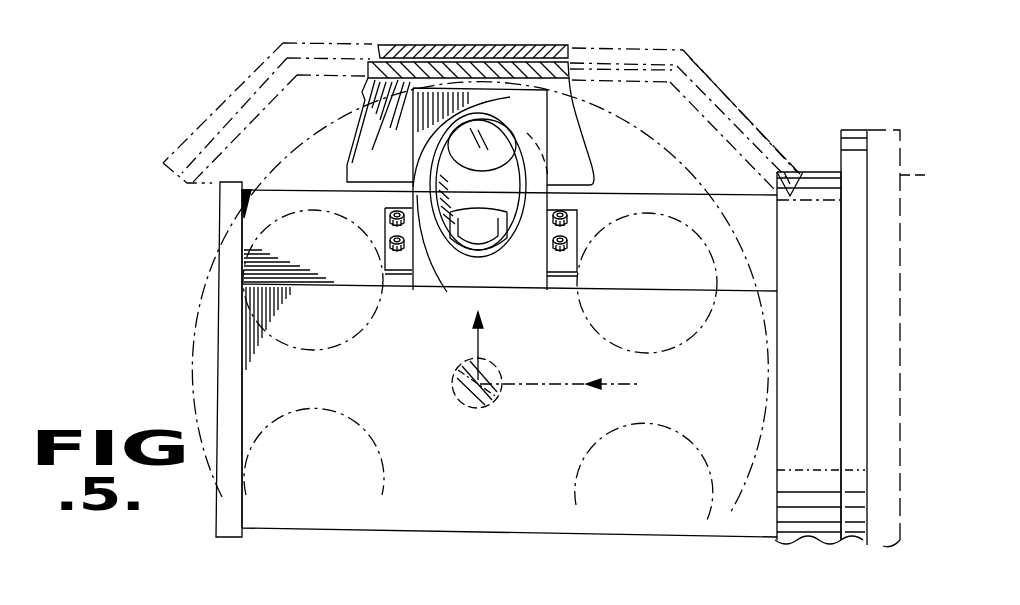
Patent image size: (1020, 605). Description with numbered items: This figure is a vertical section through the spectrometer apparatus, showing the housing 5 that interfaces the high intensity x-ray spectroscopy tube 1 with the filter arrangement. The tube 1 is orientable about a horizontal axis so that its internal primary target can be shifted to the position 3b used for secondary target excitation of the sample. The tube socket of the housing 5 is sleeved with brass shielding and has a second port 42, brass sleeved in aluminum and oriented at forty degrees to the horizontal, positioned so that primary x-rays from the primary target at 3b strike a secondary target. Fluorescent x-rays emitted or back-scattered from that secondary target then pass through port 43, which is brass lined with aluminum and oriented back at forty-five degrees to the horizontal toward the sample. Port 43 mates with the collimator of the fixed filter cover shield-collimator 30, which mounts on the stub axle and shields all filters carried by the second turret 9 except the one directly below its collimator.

The x-ray spectroscopy tube 1 is at (897, 160).
The housing 5 is at (322, 192).
The second turret 9 is at (572, 66).
The fixed filter cover shield-collimator 30 is at (500, 47).
The second port 42 is at (447, 288).
The port 43 is at (508, 204).
The primary target position 3b is at (462, 397).